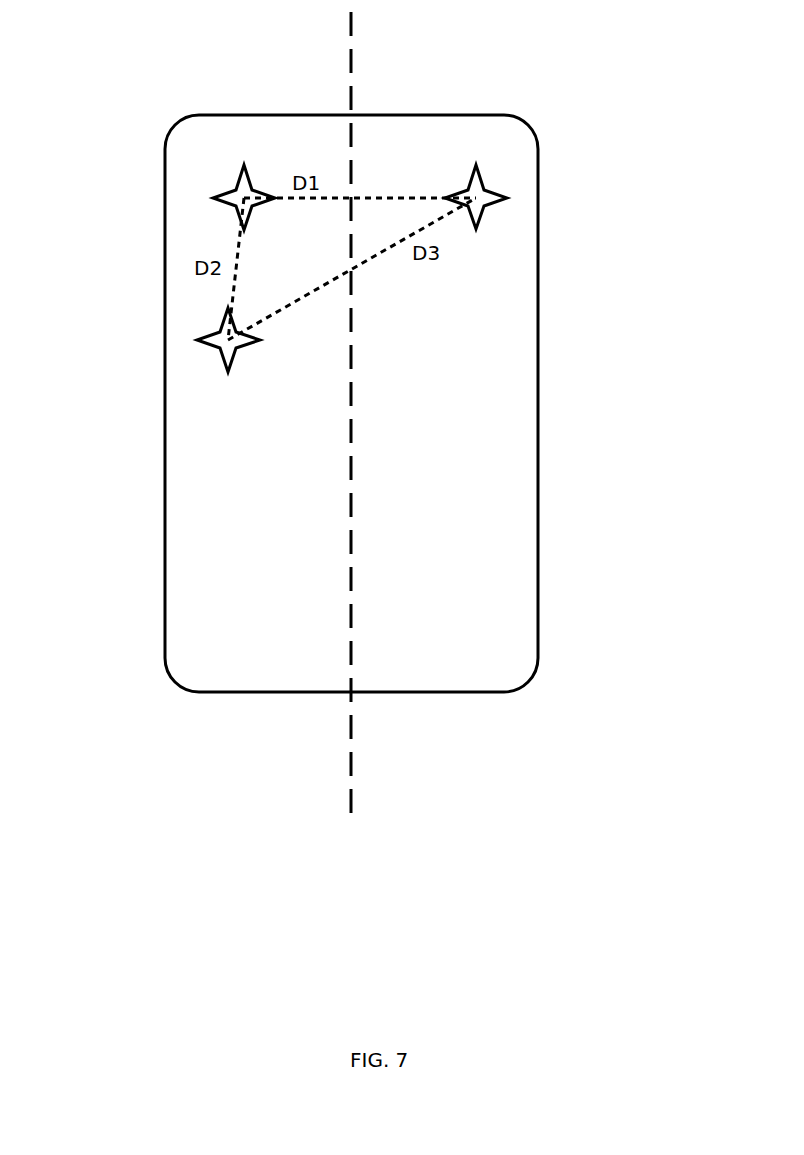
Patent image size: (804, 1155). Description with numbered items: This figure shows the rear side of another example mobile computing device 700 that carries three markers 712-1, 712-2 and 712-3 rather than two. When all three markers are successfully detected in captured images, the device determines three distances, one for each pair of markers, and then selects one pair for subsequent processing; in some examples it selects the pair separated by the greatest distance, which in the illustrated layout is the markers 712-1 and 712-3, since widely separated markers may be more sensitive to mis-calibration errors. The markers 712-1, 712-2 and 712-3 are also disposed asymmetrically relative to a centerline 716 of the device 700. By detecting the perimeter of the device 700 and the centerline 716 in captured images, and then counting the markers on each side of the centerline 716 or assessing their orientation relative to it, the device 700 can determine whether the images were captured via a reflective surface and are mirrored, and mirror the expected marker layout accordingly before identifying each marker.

The mobile computing device 700 is at (214, 108).
The centerline 716 is at (351, 782).
The first marker 712-1 is at (213, 197).
The second marker 712-2 is at (197, 340).
The third marker 712-3 is at (507, 197).